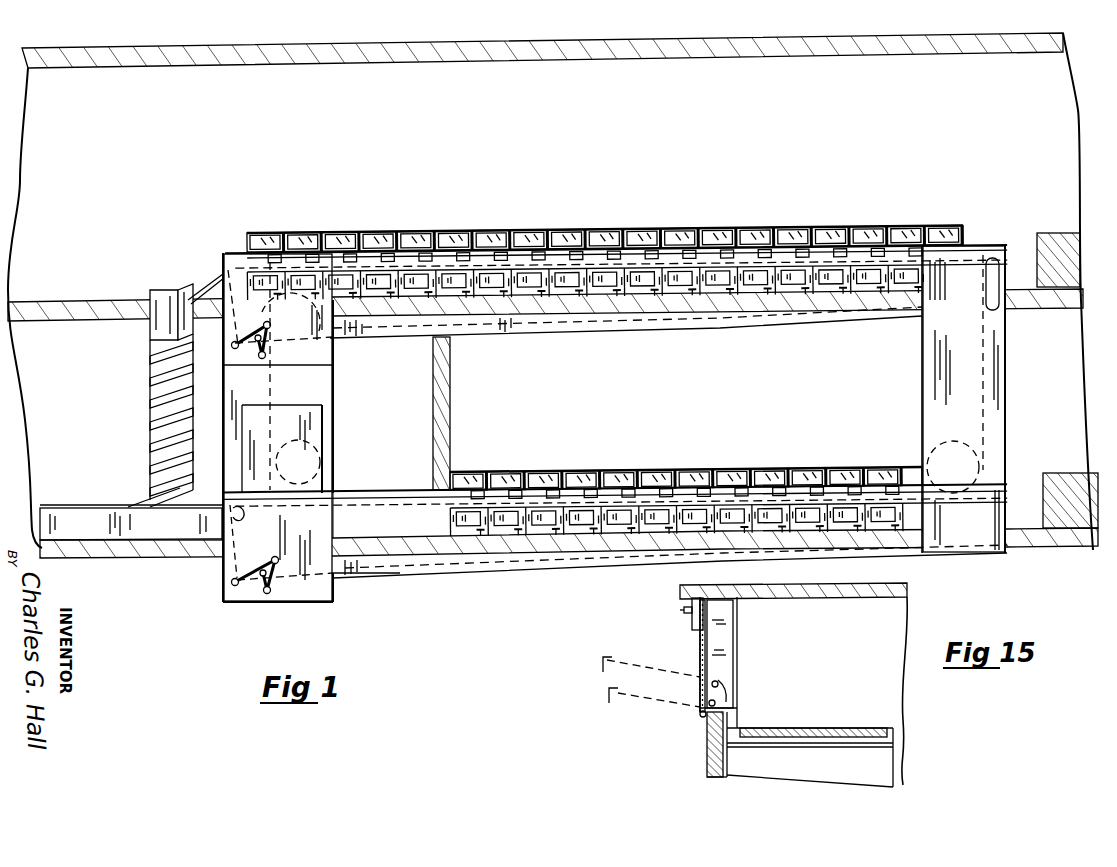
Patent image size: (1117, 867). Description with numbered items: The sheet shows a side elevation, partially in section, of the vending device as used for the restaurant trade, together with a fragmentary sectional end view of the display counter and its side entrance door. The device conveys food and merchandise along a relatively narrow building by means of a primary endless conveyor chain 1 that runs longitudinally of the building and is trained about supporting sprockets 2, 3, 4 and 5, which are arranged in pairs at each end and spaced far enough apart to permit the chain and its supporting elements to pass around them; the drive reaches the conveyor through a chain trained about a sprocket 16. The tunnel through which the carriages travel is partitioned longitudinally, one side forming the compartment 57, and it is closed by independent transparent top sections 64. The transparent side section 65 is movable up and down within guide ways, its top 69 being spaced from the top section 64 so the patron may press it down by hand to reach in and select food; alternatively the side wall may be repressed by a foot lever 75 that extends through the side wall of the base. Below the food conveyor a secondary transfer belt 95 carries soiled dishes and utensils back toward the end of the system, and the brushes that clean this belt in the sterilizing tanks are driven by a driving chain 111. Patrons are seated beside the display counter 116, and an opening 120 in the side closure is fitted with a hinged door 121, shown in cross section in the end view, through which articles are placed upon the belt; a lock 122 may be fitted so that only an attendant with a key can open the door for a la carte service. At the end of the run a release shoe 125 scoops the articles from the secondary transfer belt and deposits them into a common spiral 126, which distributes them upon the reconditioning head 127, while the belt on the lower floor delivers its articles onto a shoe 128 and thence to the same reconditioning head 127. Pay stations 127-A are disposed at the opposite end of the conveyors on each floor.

In FIG. 1, the primary endless conveyor chain 1 is at (273, 393).
In FIG. 1, the supporting sprocket 2 is at (333, 438).
In FIG. 1, the supporting sprocket 3 is at (337, 340).
In FIG. 1, the supporting sprocket 4 is at (960, 317).
In FIG. 1, the supporting sprocket 5 is at (925, 455).
In FIG. 1, the sprocket 16 is at (227, 300).
In FIG. 1, the compartment 57 is at (615, 367).
In FIG. 1, the top section 64 is at (417, 234).
In FIG. 1, the side section 65 is at (763, 231).
In FIG. 1, the top of transparent side wall member 69 is at (865, 231).
In FIG. 1, the foot lever 75 is at (660, 318).
In FIG. 1, the secondary transfer belt 95 is at (370, 501).
In FIG. 15, the secondary transfer belt 95 is at (770, 730).
In FIG. 1, the driving chain 111 is at (253, 597).
In FIG. 15, the display counter 116 is at (773, 586).
In FIG. 15, the opening 120 is at (703, 717).
In FIG. 15, the door 121 is at (700, 648).
In FIG. 15, the lock 122 is at (686, 611).
In FIG. 1, the release shoe 125 is at (208, 282).
In FIG. 1, the common spiral 126 is at (157, 330).
In FIG. 1, the reconditioning head 127 is at (63, 520).
In FIG. 1, the pay station 127-A is at (1053, 240).
In FIG. 1, the shoe 128 is at (222, 497).